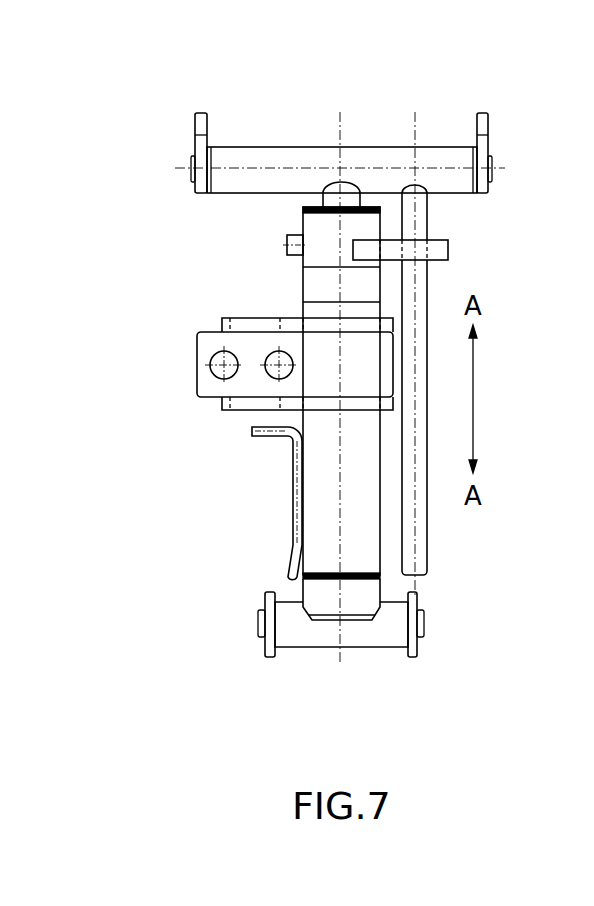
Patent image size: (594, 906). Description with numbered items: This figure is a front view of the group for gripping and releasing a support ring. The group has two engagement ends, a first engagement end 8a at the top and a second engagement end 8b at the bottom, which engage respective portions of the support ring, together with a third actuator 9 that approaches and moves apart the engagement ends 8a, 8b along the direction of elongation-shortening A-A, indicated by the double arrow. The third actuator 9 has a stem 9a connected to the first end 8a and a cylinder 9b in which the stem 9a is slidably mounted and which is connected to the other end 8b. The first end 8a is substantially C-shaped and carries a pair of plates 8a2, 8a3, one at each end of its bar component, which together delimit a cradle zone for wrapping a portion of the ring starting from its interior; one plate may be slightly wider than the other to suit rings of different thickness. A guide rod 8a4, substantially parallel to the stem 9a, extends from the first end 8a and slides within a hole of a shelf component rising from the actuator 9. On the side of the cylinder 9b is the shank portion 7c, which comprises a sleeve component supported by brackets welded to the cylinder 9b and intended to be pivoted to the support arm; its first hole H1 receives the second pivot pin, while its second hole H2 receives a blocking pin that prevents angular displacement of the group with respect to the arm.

The first engagement end 8a is at (262, 147).
The plate 8a2 is at (195, 124).
The plate 8a3 is at (488, 120).
The guide rod 8a4 is at (428, 527).
The third actuator 9 is at (303, 286).
The stem 9a is at (378, 192).
The cylinder 9b is at (293, 500).
The shank portion 7c is at (197, 393).
The first hole H1 is at (266, 374).
The second hole H2 is at (211, 371).
The second engagement end 8b is at (388, 648).